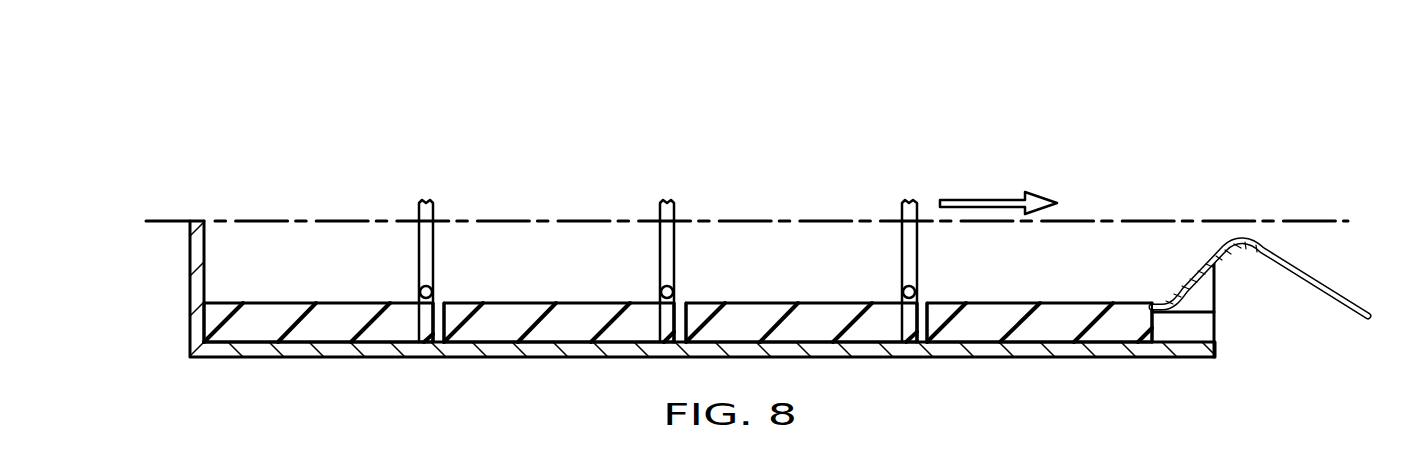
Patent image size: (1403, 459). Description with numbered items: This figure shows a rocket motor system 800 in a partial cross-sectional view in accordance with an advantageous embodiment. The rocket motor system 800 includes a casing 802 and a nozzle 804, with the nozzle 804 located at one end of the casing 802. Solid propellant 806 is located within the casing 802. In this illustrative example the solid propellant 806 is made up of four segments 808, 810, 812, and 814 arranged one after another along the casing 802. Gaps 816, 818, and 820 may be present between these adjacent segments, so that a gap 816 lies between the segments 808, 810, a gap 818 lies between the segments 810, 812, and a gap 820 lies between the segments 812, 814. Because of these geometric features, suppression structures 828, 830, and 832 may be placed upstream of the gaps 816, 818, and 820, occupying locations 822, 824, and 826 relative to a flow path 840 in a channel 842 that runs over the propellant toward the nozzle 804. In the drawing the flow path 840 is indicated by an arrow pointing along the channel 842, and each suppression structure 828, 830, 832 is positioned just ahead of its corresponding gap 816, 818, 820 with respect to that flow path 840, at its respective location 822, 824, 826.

The rocket motor system 800 is at (976, 116).
The casing 802 is at (585, 357).
The nozzle 804 is at (1347, 292).
The solid propellant 806 is at (977, 328).
The segment 808 is at (278, 302).
The segment 810 is at (517, 302).
The segment 812 is at (753, 303).
The segment 814 is at (1063, 303).
The gap 816 is at (437, 305).
The gap 818 is at (683, 305).
The gap 820 is at (925, 306).
The location 822 is at (408, 297).
The location 824 is at (645, 288).
The location 826 is at (892, 288).
The suppression structure 828 is at (417, 210).
The suppression structure 830 is at (658, 210).
The suppression structure 832 is at (901, 210).
The flow path 840 is at (982, 200).
The channel 842 is at (1187, 266).